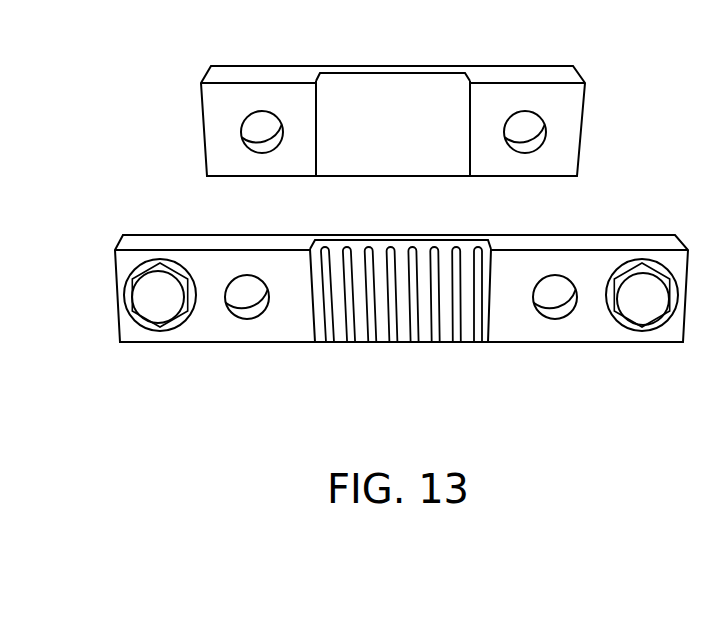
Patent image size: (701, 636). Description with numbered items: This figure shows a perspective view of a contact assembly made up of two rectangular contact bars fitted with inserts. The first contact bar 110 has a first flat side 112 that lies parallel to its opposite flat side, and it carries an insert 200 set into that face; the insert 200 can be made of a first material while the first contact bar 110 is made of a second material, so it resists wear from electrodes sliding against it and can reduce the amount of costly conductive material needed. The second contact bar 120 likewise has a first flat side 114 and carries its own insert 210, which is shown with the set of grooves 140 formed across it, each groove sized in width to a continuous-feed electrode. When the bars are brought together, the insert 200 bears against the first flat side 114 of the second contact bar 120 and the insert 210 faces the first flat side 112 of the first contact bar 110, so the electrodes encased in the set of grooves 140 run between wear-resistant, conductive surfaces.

The first contact bar 110 is at (158, 85).
The insert 200 is at (395, 107).
The first flat side 112 is at (287, 158).
The second contact bar 120 is at (98, 282).
The first flat side 114 is at (278, 323).
The set of grooves 140 is at (383, 360).
The insert 210 is at (480, 313).